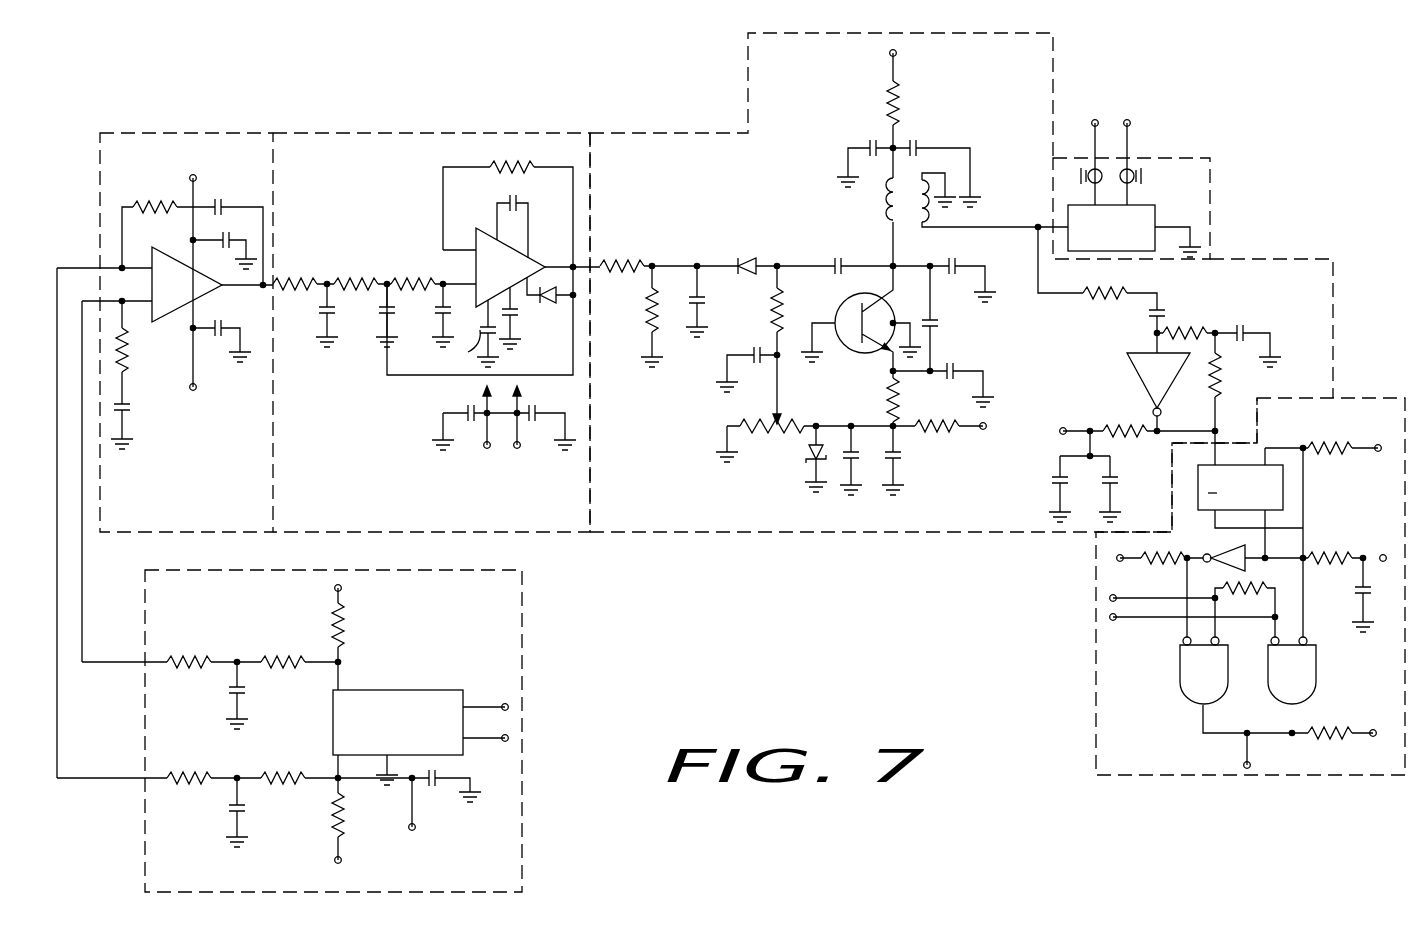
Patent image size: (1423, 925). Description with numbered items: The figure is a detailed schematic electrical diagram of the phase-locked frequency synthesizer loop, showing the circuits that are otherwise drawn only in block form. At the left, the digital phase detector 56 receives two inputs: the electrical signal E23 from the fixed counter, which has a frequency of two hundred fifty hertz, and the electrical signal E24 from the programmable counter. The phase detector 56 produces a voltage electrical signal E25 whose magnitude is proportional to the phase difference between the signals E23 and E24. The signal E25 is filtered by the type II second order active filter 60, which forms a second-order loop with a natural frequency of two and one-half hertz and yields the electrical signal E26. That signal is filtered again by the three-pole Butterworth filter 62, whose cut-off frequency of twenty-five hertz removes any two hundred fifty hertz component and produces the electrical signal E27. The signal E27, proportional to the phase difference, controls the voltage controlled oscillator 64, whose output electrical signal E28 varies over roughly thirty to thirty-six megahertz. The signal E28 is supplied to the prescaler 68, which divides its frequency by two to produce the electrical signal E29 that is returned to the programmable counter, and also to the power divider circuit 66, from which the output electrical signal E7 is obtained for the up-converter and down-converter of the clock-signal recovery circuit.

The digital phase detector 56 is at (443, 611).
The type II second order active filter 60 is at (221, 470).
The three-pole Butterworth filter 62 is at (346, 476).
The voltage controlled oscillator 64 is at (646, 477).
The power divider circuit 66 is at (1188, 196).
The prescaler 68 is at (1140, 712).
The output electrical signal E7 is at (1134, 117).
The electrical signal E23 is at (505, 742).
The electrical signal output E24 is at (505, 703).
The voltage electrical signal E25 is at (57, 507).
The electrical signal E26 is at (263, 300).
The output electrical signal E27 is at (588, 253).
The output electrical signal E28 is at (1036, 226).
The electrical signal E29 is at (1245, 766).